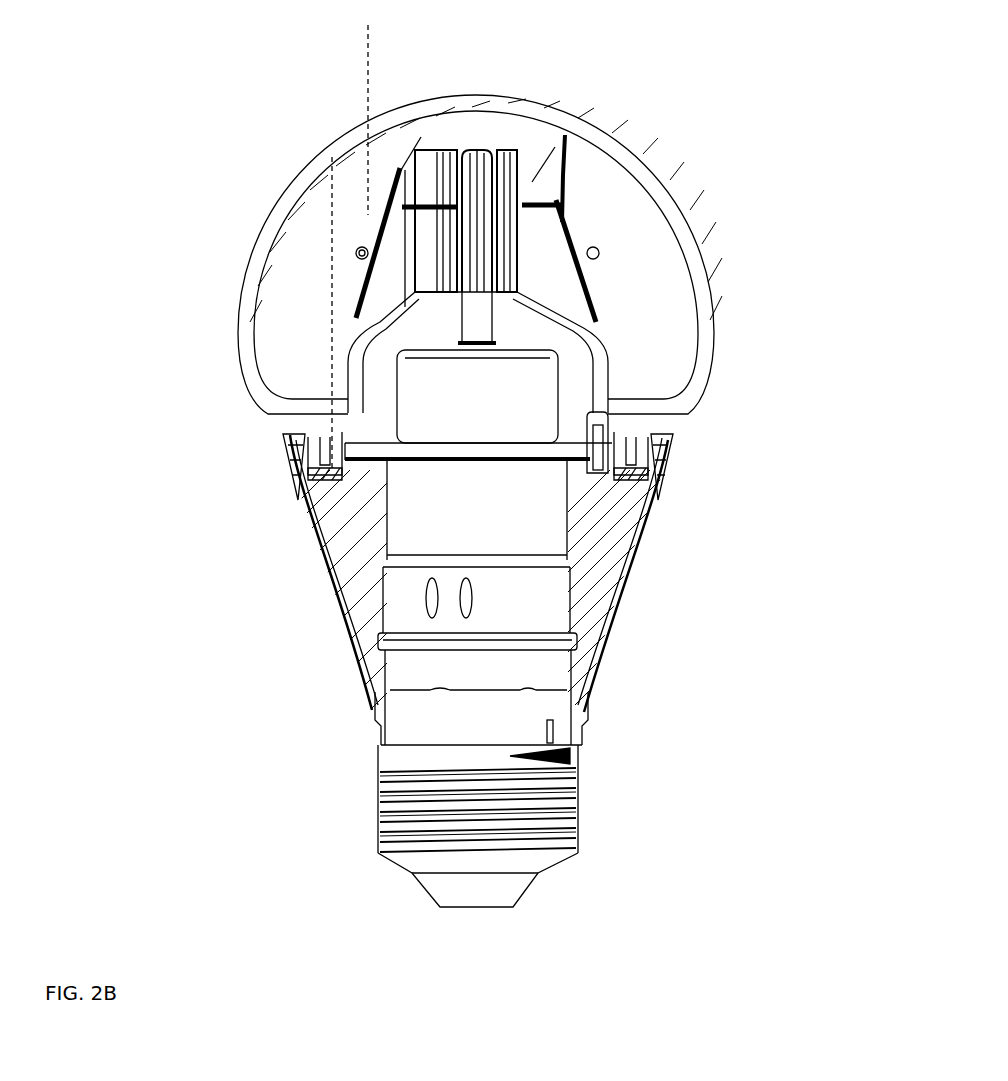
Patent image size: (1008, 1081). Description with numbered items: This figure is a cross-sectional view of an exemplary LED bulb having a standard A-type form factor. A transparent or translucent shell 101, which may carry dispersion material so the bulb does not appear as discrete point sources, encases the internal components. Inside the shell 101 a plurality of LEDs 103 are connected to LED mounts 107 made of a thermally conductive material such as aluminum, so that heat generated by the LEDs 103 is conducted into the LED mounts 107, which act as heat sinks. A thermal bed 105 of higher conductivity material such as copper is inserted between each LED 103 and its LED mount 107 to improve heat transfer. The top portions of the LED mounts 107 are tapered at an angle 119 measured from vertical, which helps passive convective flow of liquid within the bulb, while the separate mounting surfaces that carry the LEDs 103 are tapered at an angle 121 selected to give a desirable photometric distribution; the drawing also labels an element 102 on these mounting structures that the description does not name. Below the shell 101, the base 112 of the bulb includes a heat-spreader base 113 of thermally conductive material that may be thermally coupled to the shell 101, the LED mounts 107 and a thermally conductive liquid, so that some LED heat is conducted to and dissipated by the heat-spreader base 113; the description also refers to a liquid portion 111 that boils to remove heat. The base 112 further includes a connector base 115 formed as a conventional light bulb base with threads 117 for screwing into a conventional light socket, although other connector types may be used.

The shell 101 is at (553, 115).
The LED light source board 102 is at (388, 313).
The LED 103 is at (360, 252).
The thermal bed 105 is at (578, 232).
The LED mount 107 is at (425, 133).
The liquid portion 111 is at (593, 298).
The base 112 is at (565, 135).
The heat-spreader base 113 is at (632, 548).
The connector base 115 is at (393, 752).
The threads 117 is at (565, 228).
The angle 119 is at (385, 178).
The angle 121 is at (355, 256).